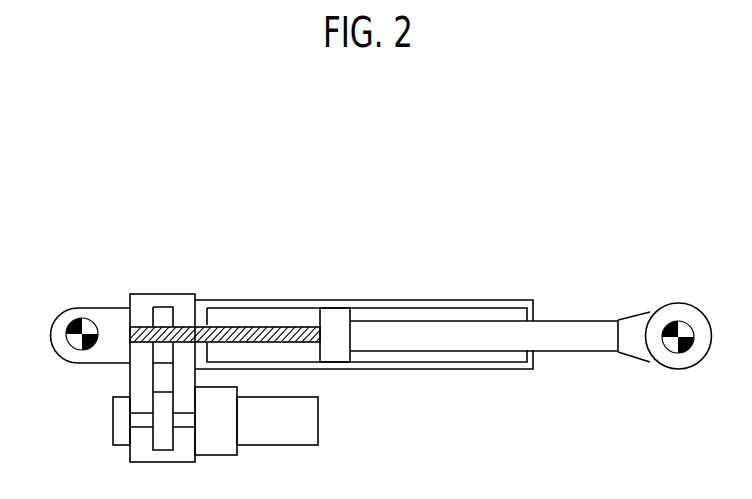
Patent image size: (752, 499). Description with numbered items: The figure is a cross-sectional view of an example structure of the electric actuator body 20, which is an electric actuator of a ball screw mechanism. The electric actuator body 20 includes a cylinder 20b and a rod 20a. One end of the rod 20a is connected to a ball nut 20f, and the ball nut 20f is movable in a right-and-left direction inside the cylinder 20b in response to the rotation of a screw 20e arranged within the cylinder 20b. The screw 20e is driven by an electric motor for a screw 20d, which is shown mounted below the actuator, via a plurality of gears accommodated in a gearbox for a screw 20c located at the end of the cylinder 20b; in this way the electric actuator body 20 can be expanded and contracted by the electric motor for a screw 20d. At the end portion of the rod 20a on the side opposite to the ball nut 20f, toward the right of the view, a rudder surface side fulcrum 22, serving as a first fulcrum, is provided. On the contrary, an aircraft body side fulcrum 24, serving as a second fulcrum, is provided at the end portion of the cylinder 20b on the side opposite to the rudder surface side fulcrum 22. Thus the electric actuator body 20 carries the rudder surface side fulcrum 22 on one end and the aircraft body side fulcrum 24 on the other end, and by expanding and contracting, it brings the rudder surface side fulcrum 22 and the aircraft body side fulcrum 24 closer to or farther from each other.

The electric actuator body 20 is at (348, 184).
The rod 20a is at (575, 353).
The cylinder 20b is at (487, 300).
The gearbox for a screw 20c is at (160, 294).
The electric motor for a screw 20d is at (318, 420).
The screw 20e is at (250, 327).
The ball nut 20f is at (333, 332).
The rudder surface side fulcrum 22 is at (668, 355).
The aircraft body side fulcrum 24 is at (78, 320).